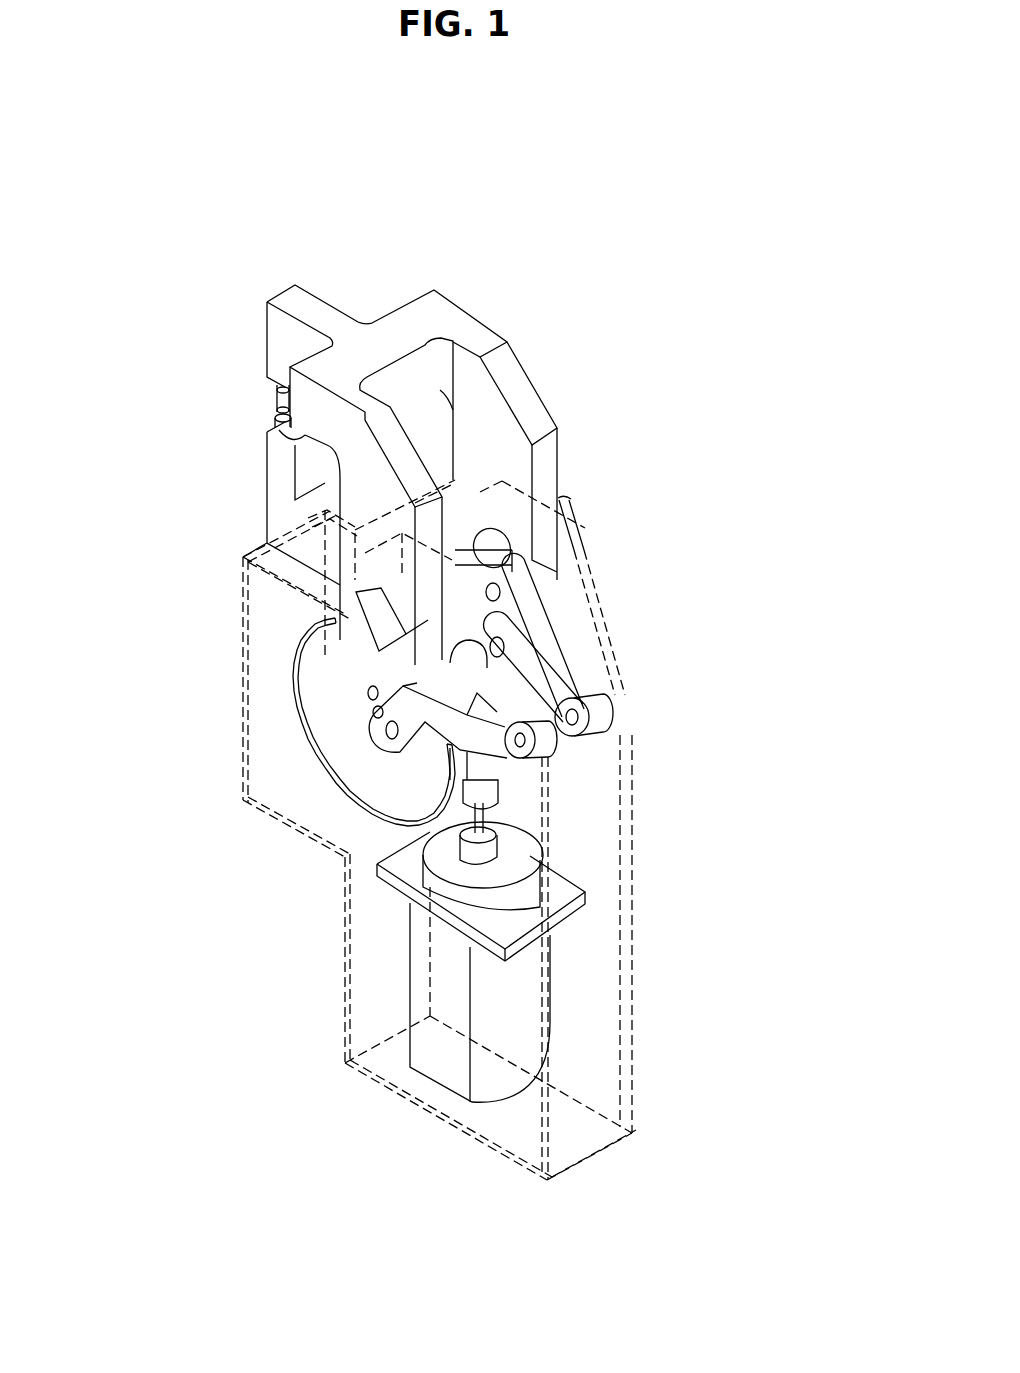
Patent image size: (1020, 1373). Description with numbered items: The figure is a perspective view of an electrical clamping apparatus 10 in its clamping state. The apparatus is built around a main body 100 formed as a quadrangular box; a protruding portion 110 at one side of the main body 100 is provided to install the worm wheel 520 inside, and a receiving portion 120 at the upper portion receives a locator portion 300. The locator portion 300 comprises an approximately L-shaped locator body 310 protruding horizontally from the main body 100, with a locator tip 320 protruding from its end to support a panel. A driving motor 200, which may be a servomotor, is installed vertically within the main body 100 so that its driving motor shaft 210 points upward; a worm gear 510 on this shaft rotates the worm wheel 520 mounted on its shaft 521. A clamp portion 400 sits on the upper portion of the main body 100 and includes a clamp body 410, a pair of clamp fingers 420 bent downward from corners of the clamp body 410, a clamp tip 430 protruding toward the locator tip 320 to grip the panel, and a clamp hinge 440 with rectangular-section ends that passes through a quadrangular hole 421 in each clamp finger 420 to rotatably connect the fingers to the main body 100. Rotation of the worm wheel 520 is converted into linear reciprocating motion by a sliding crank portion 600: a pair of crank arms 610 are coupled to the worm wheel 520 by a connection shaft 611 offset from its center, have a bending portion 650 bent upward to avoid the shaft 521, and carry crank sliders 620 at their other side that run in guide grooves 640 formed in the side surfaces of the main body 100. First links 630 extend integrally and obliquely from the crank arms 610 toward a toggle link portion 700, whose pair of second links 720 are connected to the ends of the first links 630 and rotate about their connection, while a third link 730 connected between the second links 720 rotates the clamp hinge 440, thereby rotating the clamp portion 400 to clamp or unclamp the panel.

The electrical clamping apparatus 10 is at (203, 199).
The main body 100 is at (650, 923).
The protruding portion 110 is at (239, 614).
The receiving portion 120 is at (267, 560).
The driving motor 200 is at (437, 1063).
The driving motor shaft 210 is at (395, 725).
The locator portion 300 is at (148, 390).
The locator body 310 is at (266, 498).
The locator tip 320 is at (277, 420).
The clamp portion 400 is at (683, 152).
The clamp body 410 is at (398, 330).
The clamp finger 420 is at (517, 382).
The quadrangular hole 421 is at (368, 683).
The clamp tip 430 is at (275, 389).
The clamp hinge 440 is at (417, 641).
The worm gear 510 is at (420, 843).
The worm wheel 520 is at (357, 760).
The shaft of the worm wheel 521 is at (372, 718).
The sliding crank portion 600 is at (448, 1336).
The crank arm 610 is at (540, 747).
The connection shaft 611 is at (417, 682).
The crank slider 620 is at (592, 714).
The first link 630 is at (557, 649).
The guide groove 640 is at (590, 721).
The bending portion 650 is at (468, 774).
The toggle link portion 700 is at (718, 546).
The second link 720 is at (586, 570).
The third link 730 is at (562, 515).